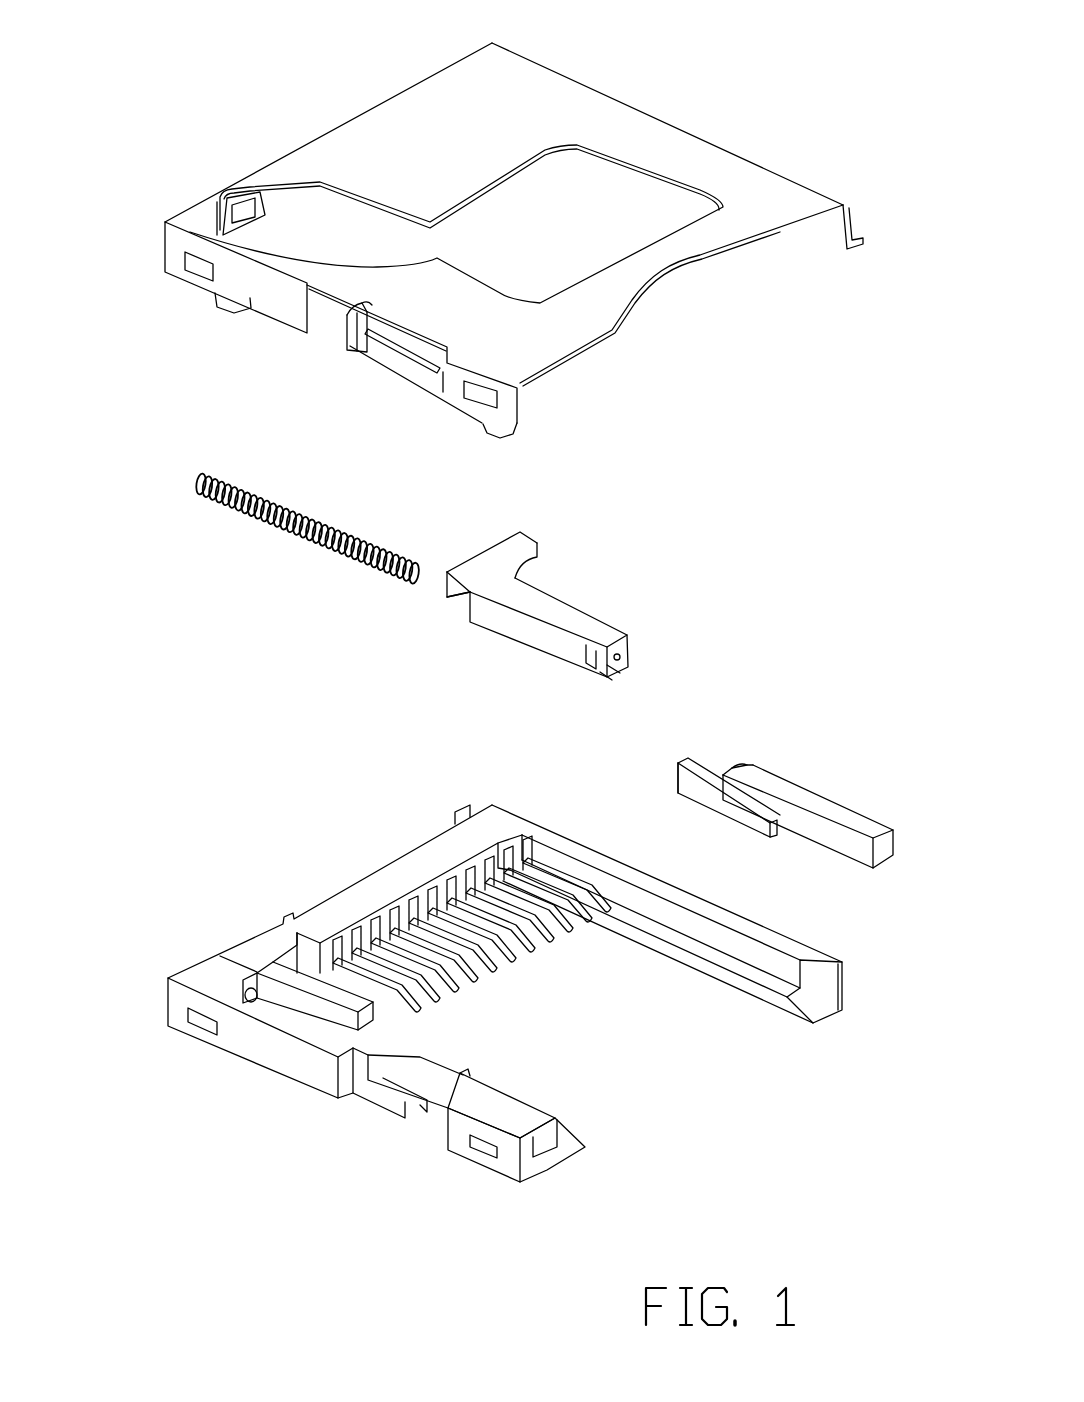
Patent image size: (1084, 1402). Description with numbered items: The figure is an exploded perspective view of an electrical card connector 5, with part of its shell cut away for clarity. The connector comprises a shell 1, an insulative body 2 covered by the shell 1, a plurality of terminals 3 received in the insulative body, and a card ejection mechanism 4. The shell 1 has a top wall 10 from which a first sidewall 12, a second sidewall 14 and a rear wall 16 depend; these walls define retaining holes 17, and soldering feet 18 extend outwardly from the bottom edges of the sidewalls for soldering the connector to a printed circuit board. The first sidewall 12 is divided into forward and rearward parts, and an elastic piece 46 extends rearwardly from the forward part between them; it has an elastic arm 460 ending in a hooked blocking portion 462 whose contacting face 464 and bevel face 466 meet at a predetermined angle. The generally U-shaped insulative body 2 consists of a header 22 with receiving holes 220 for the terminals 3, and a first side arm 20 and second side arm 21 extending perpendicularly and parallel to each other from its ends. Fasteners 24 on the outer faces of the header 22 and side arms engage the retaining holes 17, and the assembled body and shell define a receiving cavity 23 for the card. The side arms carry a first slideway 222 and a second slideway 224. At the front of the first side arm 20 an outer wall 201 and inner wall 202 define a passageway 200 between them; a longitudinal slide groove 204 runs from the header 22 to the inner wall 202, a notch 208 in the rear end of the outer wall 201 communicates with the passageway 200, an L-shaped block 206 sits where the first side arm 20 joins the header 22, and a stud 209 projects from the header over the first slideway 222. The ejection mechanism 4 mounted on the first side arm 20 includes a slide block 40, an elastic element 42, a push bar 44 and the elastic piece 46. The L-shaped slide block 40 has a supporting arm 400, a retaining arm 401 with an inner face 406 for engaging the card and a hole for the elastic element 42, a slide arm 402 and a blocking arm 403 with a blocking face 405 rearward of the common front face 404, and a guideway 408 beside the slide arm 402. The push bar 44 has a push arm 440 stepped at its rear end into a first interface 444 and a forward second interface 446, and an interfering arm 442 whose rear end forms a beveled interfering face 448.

The shell 1 is at (380, 95).
The insulative body 2 is at (322, 812).
The terminals 3 is at (470, 950).
The card ejection mechanism 4 is at (130, 740).
The electrical card connector 5 is at (897, 1237).
The top wall 10 is at (535, 95).
The first sidewall 12 is at (290, 310).
The second sidewall 14 is at (837, 232).
The rear wall 16 is at (222, 196).
The retaining holes 17 is at (250, 192).
The soldering feet 18 is at (220, 296).
The first side arm 20 is at (288, 1062).
The second side arm 21 is at (755, 973).
The header 22 is at (323, 912).
The receiving cavity 23 is at (660, 1020).
The fasteners 24 is at (197, 1027).
The slide block 40 is at (517, 642).
The elastic element 42 is at (337, 557).
The push bar 44 is at (678, 774).
The elastic piece 46 is at (190, 350).
The passageway 200 is at (538, 1150).
The outer wall 201 is at (462, 1145).
The inner wall 202 is at (530, 1102).
The slide groove 204 is at (413, 1108).
The L-shaped block 206 is at (372, 1015).
The notch 208 is at (440, 1072).
The stud 209 is at (252, 990).
The receiving holes 220 is at (478, 843).
The first slideway 222 is at (283, 993).
The second slideway 224 is at (538, 873).
The supporting arm 400 is at (592, 628).
The retaining arm 401 is at (490, 548).
The slide arm 402 is at (613, 672).
The blocking arm 403 is at (495, 615).
The front face 404 is at (622, 650).
The blocking face 405 is at (592, 670).
The inner face 406 is at (528, 560).
The guideway 408 is at (612, 680).
The push arm 440 is at (800, 795).
The interfering arm 442 is at (712, 802).
The first interface 444 is at (727, 770).
The second interface 446 is at (752, 765).
The interfering face 448 is at (678, 785).
The elastic arm 460 is at (400, 370).
The blocking portion 462 is at (360, 348).
The contacting face 464 is at (350, 318).
The bevel face 466 is at (330, 302).